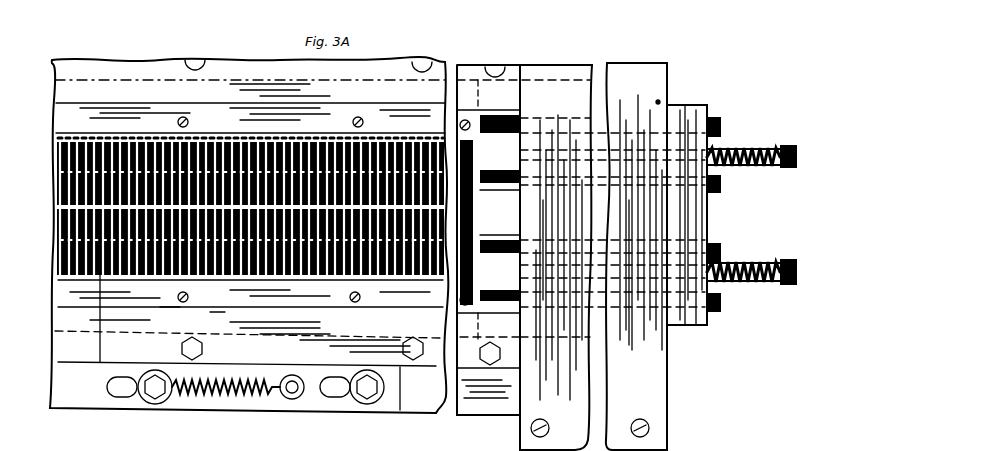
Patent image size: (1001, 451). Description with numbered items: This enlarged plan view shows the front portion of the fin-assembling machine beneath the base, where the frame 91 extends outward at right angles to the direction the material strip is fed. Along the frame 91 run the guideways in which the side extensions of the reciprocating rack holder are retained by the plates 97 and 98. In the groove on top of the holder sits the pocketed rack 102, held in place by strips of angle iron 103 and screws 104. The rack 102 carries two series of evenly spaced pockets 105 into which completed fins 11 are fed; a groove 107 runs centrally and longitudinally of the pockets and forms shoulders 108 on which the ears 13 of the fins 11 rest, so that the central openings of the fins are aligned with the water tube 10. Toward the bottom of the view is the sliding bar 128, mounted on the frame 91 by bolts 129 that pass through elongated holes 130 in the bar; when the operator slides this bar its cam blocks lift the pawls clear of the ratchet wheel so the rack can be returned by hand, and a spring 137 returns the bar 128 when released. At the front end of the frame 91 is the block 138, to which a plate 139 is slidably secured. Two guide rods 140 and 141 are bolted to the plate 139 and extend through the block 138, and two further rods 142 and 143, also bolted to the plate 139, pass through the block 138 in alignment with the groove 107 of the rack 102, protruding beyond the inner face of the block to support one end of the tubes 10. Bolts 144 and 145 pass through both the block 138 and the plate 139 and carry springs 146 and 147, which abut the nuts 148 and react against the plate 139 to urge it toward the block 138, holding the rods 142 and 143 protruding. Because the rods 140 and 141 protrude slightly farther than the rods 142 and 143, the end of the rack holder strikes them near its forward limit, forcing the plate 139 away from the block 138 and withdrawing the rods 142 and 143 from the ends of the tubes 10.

The water tube 10 is at (490, 240).
The fins 11 is at (216, 313).
The ears 13 is at (221, 289).
The frame 91 is at (248, 75).
The plate 97 is at (133, 75).
The plate 98 is at (72, 345).
The pocketed rack 102 is at (60, 212).
The strips of angle iron 103 is at (127, 117).
The screws 104 is at (168, 305).
The pockets 105 is at (62, 263).
The groove 107 is at (60, 178).
The shoulders 108 is at (107, 317).
The sliding bar 128 is at (275, 397).
The bolts 129 is at (157, 397).
The elongated holes 130 is at (122, 397).
The spring 137 is at (226, 397).
The block 138 is at (566, 80).
The plate 139 is at (693, 112).
The guide rod 140 is at (500, 132).
The guide rod 141 is at (498, 292).
The rod 142 is at (485, 153).
The rod 143 is at (500, 255).
The bolt 144 is at (790, 144).
The bolt 145 is at (783, 285).
The spring 146 is at (762, 148).
The spring 147 is at (770, 262).
The nuts 148 is at (718, 124).